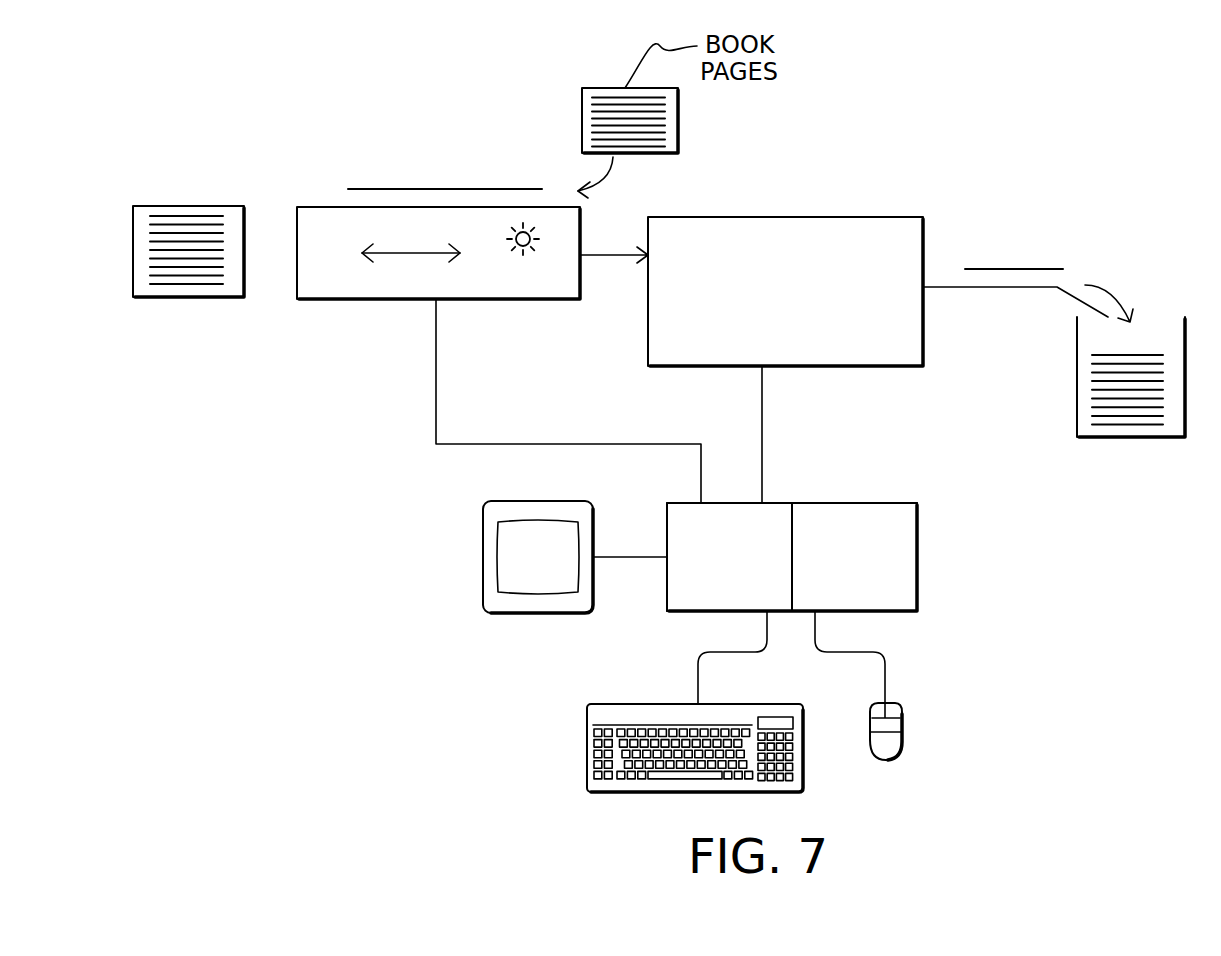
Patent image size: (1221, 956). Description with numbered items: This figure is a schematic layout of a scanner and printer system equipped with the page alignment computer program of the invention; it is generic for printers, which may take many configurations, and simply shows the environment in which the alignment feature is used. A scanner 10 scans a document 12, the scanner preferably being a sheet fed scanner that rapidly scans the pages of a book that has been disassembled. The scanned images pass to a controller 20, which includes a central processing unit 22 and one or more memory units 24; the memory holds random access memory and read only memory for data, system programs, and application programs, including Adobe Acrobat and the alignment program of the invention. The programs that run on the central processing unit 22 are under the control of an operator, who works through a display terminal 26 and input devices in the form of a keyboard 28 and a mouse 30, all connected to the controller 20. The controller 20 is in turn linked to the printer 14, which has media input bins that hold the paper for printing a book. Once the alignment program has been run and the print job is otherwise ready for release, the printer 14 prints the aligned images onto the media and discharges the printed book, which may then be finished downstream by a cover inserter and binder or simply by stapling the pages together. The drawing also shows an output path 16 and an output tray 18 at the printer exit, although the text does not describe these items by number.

The scanner 10 is at (350, 280).
The document 12 is at (422, 189).
The printer 14 is at (776, 216).
The output path 16 is at (1005, 268).
The output tray for scanned pages 18 is at (1125, 440).
The controller 20 is at (820, 589).
The central processing unit 22 is at (690, 582).
The memory unit 24 is at (892, 557).
The display terminal 26 is at (488, 552).
The keyboard 28 is at (652, 793).
The mouse 30 is at (895, 732).